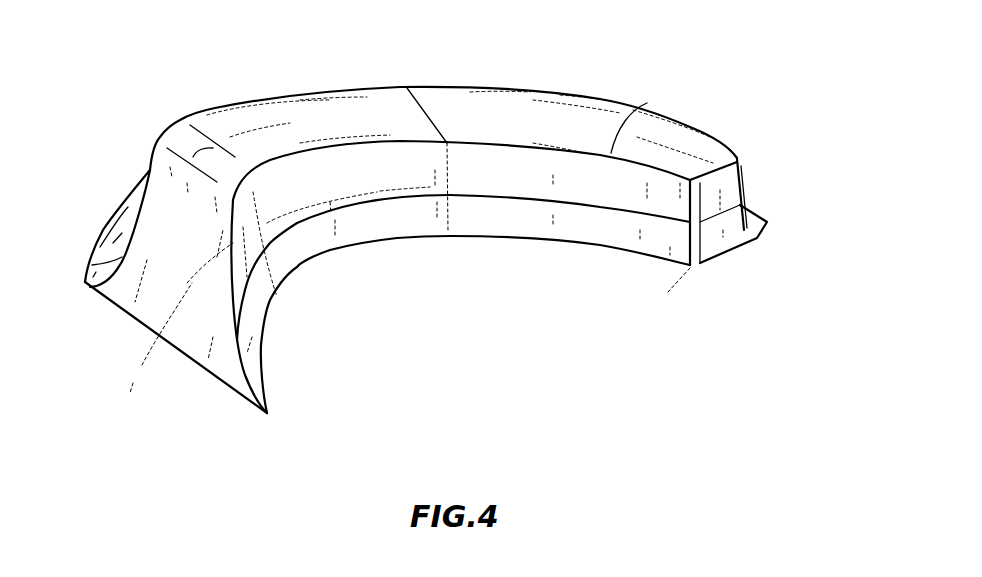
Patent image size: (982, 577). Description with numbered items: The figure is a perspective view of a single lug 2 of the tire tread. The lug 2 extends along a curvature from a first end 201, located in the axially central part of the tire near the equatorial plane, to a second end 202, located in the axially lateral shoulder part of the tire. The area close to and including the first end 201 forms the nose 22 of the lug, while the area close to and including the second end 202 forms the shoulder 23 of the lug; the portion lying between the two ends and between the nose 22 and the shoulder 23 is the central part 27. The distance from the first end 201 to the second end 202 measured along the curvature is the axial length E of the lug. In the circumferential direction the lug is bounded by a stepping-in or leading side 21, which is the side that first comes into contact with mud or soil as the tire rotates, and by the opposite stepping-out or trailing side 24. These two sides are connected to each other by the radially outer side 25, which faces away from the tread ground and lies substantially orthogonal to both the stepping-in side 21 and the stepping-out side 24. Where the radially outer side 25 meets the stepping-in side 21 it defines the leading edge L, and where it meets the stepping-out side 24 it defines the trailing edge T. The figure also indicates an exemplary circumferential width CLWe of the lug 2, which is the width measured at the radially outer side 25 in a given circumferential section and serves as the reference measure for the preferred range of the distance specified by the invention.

The lug 2 is at (437, 247).
The radially outer side 25 is at (280, 115).
The exemplary circumferential width of the lug CLWe is at (425, 100).
The stepping-out side 24 is at (488, 88).
The trailing edge T is at (578, 92).
The leading edge L is at (647, 103).
The first end 201 is at (756, 197).
The nose region 22 is at (739, 247).
The central part of the lug 27 is at (458, 236).
The stepping-in side 21 is at (577, 242).
The second end 202 is at (118, 328).
The axial length of the lug E is at (142, 365).
The shoulder region 23 is at (201, 366).